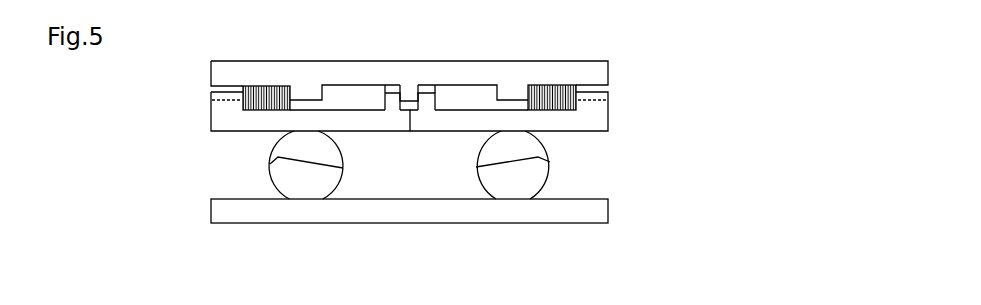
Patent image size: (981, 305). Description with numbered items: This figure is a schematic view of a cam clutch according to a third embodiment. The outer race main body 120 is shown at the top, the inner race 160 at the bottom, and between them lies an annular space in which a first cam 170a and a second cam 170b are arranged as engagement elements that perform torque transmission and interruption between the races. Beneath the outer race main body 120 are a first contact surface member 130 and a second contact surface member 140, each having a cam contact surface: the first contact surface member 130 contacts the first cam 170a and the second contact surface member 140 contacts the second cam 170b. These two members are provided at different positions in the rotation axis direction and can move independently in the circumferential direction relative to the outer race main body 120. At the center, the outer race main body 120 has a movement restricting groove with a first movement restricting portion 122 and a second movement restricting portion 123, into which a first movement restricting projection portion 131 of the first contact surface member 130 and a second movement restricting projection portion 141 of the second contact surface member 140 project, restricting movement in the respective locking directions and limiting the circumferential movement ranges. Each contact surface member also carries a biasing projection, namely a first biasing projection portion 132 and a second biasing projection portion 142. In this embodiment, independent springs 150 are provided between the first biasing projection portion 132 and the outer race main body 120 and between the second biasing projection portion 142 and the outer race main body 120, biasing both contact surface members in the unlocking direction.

The outer race main body 120 is at (228, 76).
The first movement restricting portion 122 is at (405, 94).
The second movement restricting portion 123 is at (420, 92).
The first contact surface member 130 is at (220, 119).
The first movement restricting projection portion 131 is at (386, 97).
The first biasing projection portion 132 is at (212, 100).
The second contact surface member 140 is at (593, 117).
The second movement restricting projection portion 141 is at (436, 100).
The second biasing projection portion 142 is at (592, 100).
The spring 150 is at (268, 90).
The inner race 160 is at (230, 212).
The first cam 170a is at (308, 180).
The second cam 170b is at (513, 177).